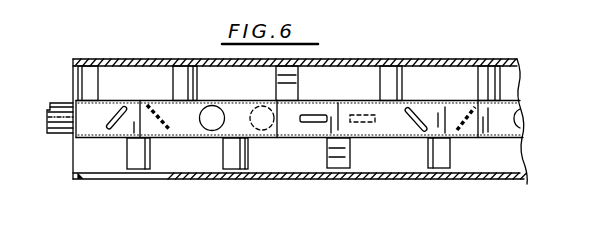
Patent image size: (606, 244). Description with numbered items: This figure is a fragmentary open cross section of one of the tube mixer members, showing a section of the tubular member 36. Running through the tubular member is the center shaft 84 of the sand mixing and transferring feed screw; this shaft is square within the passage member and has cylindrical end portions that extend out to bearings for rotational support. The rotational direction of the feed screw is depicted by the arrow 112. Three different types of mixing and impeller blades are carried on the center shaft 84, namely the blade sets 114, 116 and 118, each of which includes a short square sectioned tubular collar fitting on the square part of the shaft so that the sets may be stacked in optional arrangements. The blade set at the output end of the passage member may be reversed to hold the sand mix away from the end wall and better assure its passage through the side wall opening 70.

The tubular member 36 is at (498, 66).
The side wall opening 70 is at (85, 179).
The center shaft 84 is at (60, 110).
The arrow 112 is at (337, 83).
The blade set 114 is at (213, 139).
The blade set 116 is at (346, 100).
The blade set 118 is at (415, 138).